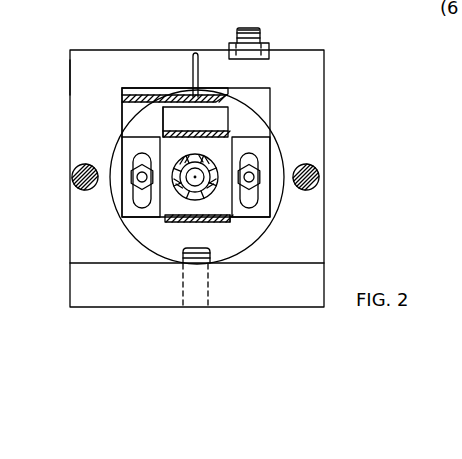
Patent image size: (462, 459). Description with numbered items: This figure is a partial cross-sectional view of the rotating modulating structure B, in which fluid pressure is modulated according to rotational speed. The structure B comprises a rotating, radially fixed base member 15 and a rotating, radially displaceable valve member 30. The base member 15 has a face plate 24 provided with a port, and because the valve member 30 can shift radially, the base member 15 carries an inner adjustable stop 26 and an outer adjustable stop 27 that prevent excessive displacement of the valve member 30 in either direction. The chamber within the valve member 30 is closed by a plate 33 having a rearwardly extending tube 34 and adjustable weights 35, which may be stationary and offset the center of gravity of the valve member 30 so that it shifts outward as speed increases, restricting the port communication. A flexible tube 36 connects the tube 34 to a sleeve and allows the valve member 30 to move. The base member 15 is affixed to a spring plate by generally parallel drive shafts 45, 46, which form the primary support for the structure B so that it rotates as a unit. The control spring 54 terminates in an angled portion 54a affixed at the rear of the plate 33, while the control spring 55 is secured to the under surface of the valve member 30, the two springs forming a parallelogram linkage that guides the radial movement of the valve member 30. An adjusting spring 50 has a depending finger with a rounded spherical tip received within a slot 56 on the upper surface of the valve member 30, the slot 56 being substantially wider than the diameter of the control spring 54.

The rotating modulating structure B is at (66, 76).
The base member 15 is at (326, 65).
The face plate 24 is at (264, 233).
The inner adjustable stop 26 is at (187, 252).
The outer adjustable stop 27 is at (266, 43).
The valve member 30 is at (118, 95).
The plate 33 is at (264, 118).
The tube 34 is at (188, 192).
The adjustable weights 35 is at (266, 149).
The flexible tube 36 is at (216, 185).
The drive shaft 45 is at (319, 176).
The drive shaft 46 is at (71, 176).
The adjusting spring 50 is at (198, 57).
The control spring 54 is at (217, 135).
The angled portion 54a is at (173, 121).
The control spring 55 is at (220, 220).
The slot 56 is at (142, 89).